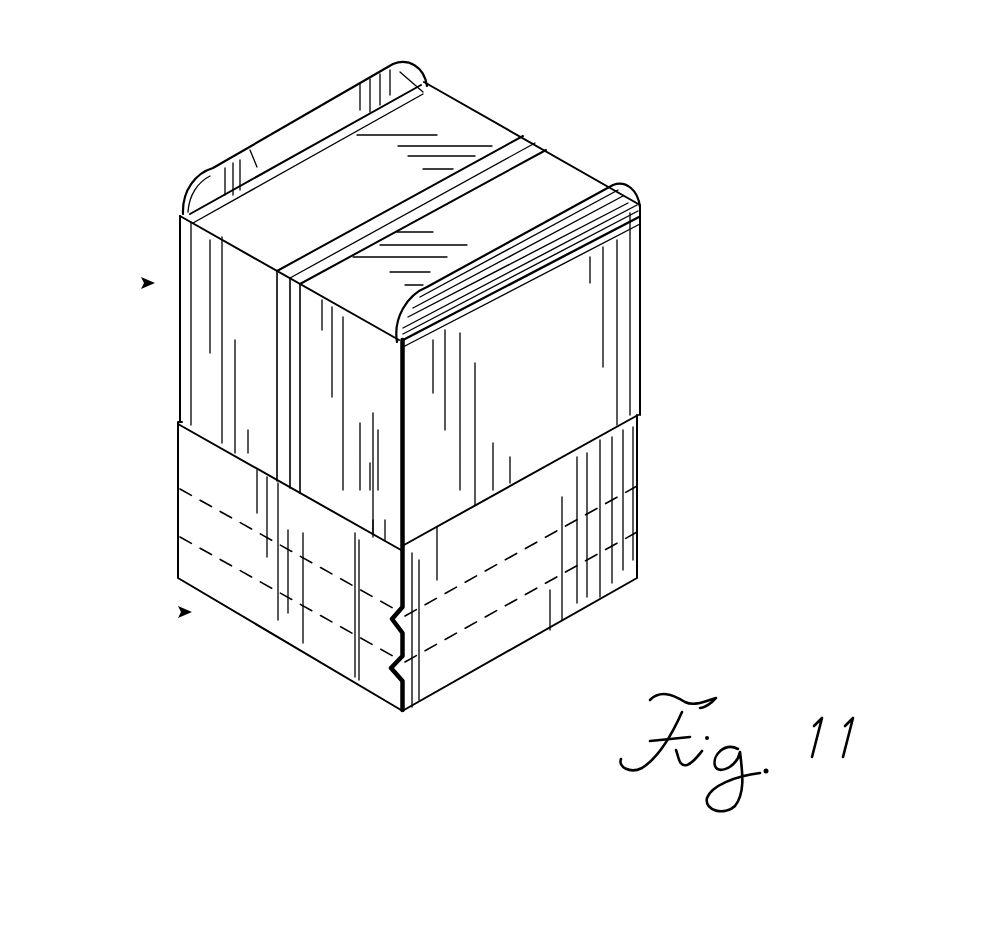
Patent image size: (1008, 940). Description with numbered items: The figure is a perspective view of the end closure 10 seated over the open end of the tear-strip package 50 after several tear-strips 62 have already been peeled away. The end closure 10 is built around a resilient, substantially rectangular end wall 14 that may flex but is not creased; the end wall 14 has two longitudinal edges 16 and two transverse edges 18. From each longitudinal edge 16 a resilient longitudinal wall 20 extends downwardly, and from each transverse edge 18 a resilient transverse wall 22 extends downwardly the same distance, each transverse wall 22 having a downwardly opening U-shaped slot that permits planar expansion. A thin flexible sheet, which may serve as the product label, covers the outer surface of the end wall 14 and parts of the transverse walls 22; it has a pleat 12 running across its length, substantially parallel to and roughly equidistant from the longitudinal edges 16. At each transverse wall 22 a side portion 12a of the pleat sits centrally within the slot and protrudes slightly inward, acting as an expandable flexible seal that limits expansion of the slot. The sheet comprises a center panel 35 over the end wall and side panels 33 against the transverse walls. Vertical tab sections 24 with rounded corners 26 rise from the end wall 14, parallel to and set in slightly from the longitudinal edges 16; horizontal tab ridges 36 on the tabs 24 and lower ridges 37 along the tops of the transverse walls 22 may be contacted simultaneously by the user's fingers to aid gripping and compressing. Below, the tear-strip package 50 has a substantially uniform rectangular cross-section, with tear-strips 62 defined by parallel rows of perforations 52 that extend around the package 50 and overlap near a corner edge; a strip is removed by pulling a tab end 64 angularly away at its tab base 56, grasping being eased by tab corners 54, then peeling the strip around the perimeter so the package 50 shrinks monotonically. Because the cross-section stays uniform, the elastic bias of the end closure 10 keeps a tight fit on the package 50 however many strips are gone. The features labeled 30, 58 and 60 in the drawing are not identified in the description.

The end closure 10 is at (762, 317).
The pleat 12 is at (523, 148).
The side portion of the pleat 12a is at (280, 488).
The end wall 14 is at (433, 80).
The longitudinal edges 16 is at (640, 226).
The transverse edges 18 is at (590, 176).
The longitudinal wall 20 is at (577, 410).
The transverse wall 22 is at (187, 358).
The vertical tab sections 24 is at (237, 157).
The rounded corners 26 is at (195, 190).
The side wall edge 30 is at (640, 388).
The side panels 33 is at (217, 303).
The center panel 35 is at (213, 220).
The tab ridges 36 is at (635, 196).
The lower ridges 37 is at (588, 254).
The tear-strip package 50 is at (740, 552).
The perforations 52 is at (487, 623).
The tab corners 54 is at (395, 680).
The tab base 56 is at (357, 620).
The direction of insertion 58 is at (143, 283).
The direction of removal 60 is at (180, 612).
The tear-strips 62 is at (323, 593).
The tab end 64 is at (403, 640).